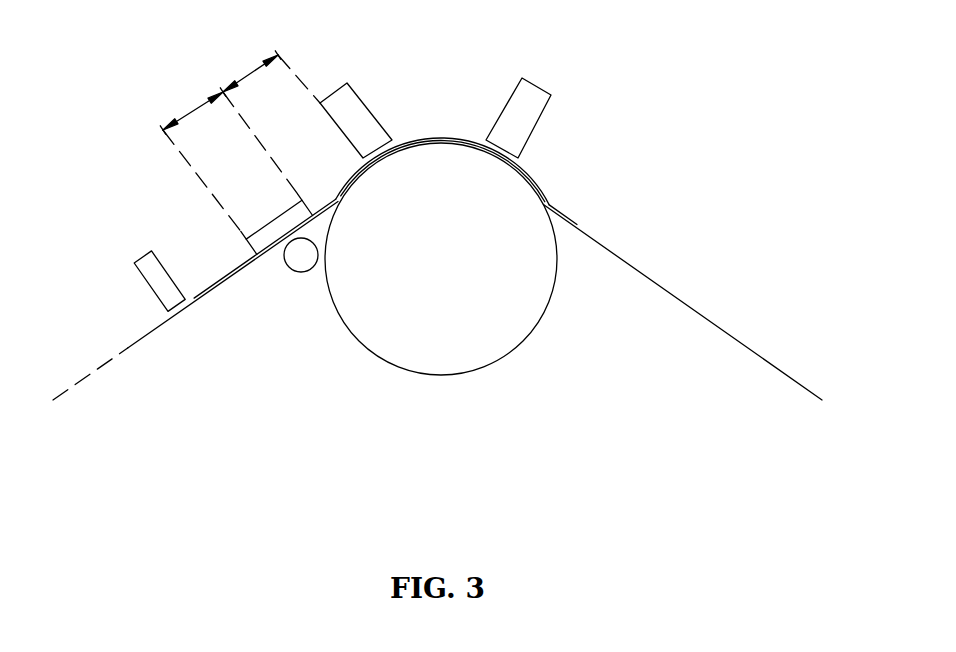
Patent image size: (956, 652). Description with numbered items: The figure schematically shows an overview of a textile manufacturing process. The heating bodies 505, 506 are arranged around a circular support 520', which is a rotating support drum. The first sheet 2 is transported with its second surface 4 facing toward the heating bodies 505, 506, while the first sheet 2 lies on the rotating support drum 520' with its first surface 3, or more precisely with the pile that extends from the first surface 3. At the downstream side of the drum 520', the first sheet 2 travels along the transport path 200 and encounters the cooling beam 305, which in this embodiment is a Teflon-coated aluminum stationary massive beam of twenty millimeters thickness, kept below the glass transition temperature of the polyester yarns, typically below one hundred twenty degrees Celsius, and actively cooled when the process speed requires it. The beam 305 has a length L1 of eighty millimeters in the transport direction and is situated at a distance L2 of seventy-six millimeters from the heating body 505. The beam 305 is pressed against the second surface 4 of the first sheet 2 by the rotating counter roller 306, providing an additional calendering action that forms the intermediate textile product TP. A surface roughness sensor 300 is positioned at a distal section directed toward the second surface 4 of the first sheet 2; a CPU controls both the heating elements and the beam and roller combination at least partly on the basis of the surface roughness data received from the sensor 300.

The first sheet 2 is at (712, 200).
The first surface 3 is at (740, 347).
The second surface 4 is at (702, 333).
The transport path 200 is at (143, 342).
The intermediate textile product TP is at (200, 297).
The surface roughness sensor 300 is at (148, 290).
The cooling beam 305 is at (251, 255).
The rotating counter roller 306 is at (309, 271).
The heating body 505 is at (357, 90).
The heating body 506 is at (545, 113).
The circular support 520' is at (487, 272).
The length L1 is at (229, 152).
The distance L2 is at (267, 67).